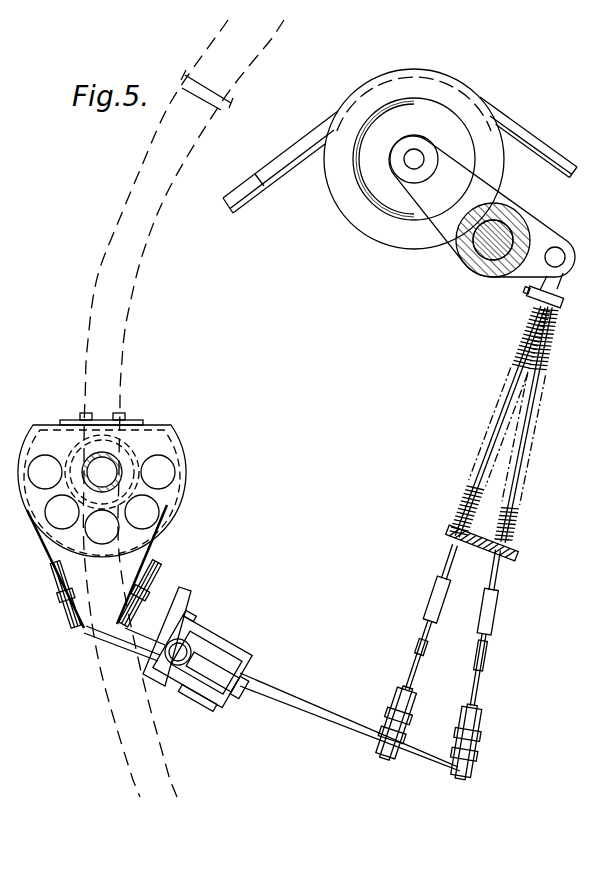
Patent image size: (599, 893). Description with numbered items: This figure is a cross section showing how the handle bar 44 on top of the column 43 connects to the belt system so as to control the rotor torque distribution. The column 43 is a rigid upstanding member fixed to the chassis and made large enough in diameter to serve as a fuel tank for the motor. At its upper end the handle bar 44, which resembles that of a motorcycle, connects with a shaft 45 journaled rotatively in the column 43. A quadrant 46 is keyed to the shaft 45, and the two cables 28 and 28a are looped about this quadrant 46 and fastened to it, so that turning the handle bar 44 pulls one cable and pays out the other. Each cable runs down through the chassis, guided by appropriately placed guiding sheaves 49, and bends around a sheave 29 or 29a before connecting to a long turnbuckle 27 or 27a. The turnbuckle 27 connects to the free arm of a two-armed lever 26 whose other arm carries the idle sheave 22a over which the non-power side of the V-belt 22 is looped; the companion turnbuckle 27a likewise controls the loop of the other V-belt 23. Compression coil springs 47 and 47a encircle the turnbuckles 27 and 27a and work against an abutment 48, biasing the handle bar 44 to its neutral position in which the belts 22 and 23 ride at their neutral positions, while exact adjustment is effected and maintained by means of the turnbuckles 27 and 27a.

The V-belt 22 is at (280, 160).
The V-belt 23 is at (238, 195).
The idle sheave 22a is at (362, 216).
The two-armed lever 26 is at (452, 247).
The handle bar 44 is at (115, 300).
The column 43 is at (70, 455).
The quadrant 46 is at (163, 441).
The shaft 45 is at (115, 481).
The cable 28a is at (415, 668).
The cable 28 is at (478, 683).
The guiding sheave 49 is at (57, 590).
The compression coil spring 47a is at (476, 502).
The compression coil spring 47 is at (512, 515).
The abutment 48 is at (518, 549).
The turnbuckle 27a is at (453, 560).
The turnbuckle 27 is at (503, 573).
The sheave 29a is at (390, 753).
The sheave 29 is at (463, 757).